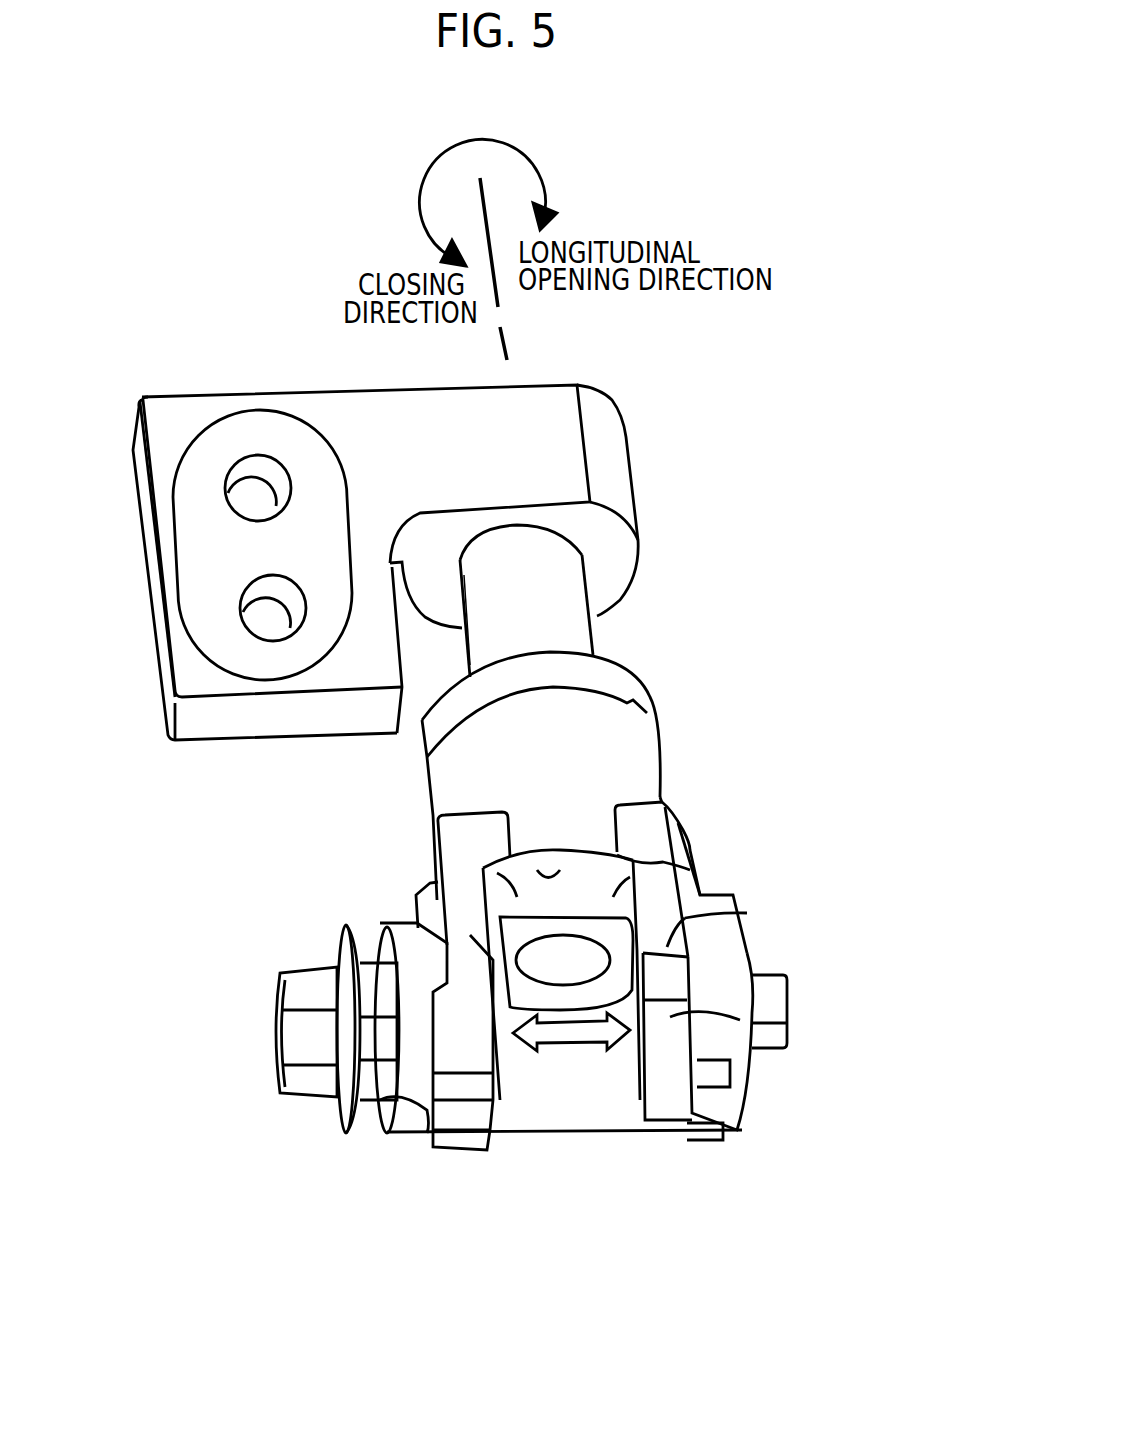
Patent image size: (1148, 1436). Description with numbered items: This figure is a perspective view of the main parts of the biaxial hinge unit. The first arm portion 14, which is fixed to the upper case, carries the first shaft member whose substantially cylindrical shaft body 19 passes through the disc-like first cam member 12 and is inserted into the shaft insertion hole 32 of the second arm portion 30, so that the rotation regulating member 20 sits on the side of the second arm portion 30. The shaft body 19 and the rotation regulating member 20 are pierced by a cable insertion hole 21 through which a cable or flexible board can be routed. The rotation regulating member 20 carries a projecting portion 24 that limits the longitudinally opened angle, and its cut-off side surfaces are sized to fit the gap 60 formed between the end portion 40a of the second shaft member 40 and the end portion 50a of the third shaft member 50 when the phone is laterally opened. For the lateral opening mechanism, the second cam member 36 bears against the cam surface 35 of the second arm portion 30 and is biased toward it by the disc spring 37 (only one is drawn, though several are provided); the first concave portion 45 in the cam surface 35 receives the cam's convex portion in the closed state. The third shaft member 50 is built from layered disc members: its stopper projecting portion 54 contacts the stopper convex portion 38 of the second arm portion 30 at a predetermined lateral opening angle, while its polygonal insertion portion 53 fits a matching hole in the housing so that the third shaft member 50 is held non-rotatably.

The first arm portion 14 is at (170, 412).
The shaft body 19 is at (580, 630).
The first cam member 12 is at (620, 680).
The second arm portion 30 is at (630, 750).
The projecting portion 24 is at (460, 870).
The rotation regulating member 20 is at (705, 872).
The shaft insertion hole 32 is at (543, 863).
The end portion of second shaft member 40a is at (533, 1075).
The end portion of third shaft member 50a is at (627, 1080).
The cable insertion hole 21 is at (587, 947).
The gap 60 is at (567, 1040).
The second cam member 36 is at (407, 1120).
The first concave portion 45 is at (417, 923).
The second shaft member 40 is at (303, 1047).
The disc spring 37 is at (340, 1130).
The cam surface 35 is at (387, 1130).
The third shaft member 50 is at (760, 1023).
The stopper convex portion 38 is at (745, 912).
The stopper projecting portion 54 is at (667, 1113).
The insertion portion 53 is at (780, 1000).